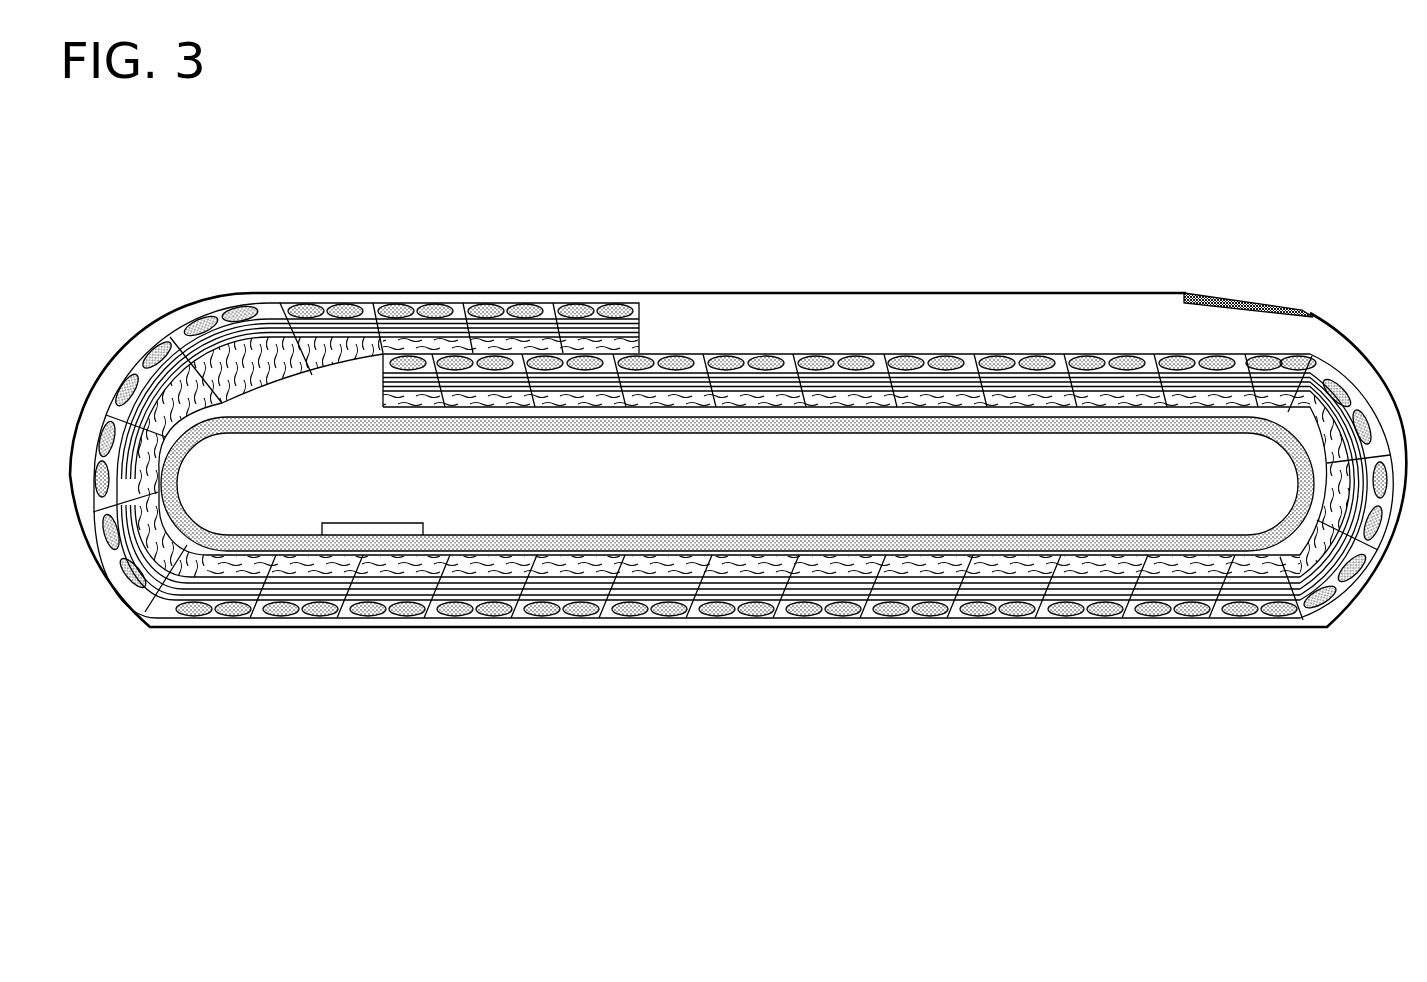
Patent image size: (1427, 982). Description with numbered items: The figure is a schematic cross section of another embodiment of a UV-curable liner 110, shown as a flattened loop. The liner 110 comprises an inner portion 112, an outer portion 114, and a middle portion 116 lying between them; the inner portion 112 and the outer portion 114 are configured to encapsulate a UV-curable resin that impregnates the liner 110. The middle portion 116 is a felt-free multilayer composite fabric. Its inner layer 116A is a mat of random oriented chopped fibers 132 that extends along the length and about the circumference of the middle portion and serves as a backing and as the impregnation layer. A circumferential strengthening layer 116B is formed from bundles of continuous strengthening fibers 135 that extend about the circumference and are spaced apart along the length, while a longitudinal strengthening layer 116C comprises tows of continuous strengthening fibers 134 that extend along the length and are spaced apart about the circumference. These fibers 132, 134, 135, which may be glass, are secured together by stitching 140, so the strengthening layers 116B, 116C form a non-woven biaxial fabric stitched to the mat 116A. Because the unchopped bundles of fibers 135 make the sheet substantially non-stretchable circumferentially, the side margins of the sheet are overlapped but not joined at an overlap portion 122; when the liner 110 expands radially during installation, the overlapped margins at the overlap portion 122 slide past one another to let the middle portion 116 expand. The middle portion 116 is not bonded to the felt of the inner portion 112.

The liner 110 is at (207, 786).
The inner portion 112 is at (1131, 443).
The outer portion 114 is at (980, 302).
The middle portion 116 is at (888, 424).
The inner layer 116A is at (1008, 570).
The circumferential strengthening layer 116B is at (633, 600).
The longitudinal strengthening layer 116C is at (826, 588).
The overlap portion 122 is at (377, 288).
The random oriented chopped fibers 132 is at (752, 563).
The continuous strengthening fibers 134 is at (1013, 615).
The continuous strengthening fibers 135 is at (495, 593).
The stitching 140 is at (807, 357).